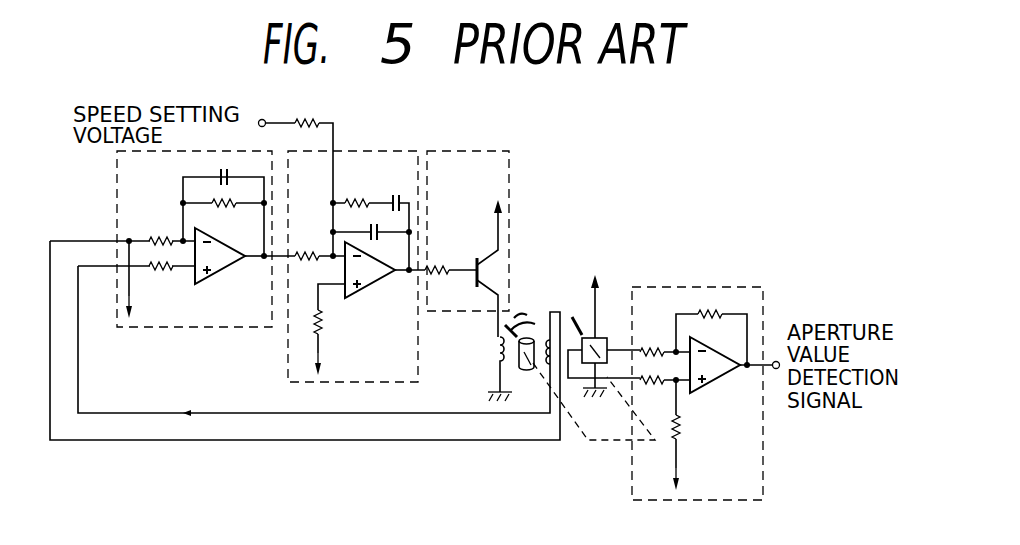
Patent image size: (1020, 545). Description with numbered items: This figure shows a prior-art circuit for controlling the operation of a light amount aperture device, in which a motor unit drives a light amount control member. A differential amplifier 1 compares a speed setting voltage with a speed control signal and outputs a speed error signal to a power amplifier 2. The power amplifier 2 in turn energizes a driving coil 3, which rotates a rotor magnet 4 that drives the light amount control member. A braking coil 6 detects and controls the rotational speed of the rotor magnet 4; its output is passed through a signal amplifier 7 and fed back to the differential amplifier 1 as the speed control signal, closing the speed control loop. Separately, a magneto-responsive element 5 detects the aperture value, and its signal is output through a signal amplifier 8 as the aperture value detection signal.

The signal amplifier 7 is at (178, 329).
The differential amplifier 1 is at (288, 381).
The power amplifier 2 is at (483, 151).
The driving coil 3 is at (498, 350).
The rotor magnet 4 is at (527, 370).
The braking coil 6 is at (548, 340).
The magneto-responsive element 5 is at (600, 335).
The signal amplifier 8 is at (720, 285).